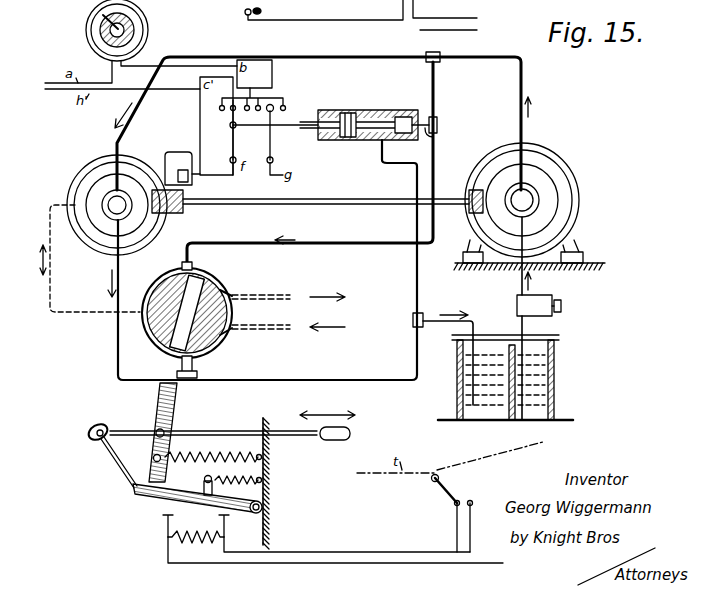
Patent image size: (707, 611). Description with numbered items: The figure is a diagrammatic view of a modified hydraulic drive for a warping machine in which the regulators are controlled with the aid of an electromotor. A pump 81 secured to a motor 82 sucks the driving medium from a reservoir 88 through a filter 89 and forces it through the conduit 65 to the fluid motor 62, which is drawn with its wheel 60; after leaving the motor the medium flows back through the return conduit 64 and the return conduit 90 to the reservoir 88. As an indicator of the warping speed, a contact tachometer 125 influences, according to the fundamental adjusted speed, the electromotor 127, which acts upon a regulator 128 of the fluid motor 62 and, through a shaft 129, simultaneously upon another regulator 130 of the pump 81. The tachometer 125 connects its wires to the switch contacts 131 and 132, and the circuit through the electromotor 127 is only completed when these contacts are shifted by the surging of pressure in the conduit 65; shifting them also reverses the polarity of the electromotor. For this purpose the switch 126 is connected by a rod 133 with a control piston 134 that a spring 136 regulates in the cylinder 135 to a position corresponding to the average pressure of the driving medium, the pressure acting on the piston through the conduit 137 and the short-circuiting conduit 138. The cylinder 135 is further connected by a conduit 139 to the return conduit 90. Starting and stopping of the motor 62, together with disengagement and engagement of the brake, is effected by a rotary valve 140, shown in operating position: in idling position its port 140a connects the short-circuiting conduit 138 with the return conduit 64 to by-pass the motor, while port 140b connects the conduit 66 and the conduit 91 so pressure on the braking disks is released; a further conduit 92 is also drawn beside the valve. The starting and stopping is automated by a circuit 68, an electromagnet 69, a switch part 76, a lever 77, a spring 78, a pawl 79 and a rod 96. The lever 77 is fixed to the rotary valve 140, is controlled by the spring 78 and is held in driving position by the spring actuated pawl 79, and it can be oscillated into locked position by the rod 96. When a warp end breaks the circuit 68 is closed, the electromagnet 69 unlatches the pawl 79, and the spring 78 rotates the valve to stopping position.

The contact tachometer 125 is at (140, 24).
The automatic starting and stopping part 76 is at (246, 14).
The conduit 65 is at (220, 56).
The switch contact 132 is at (277, 105).
The switch contact 131 is at (231, 124).
The switch 126 is at (231, 159).
The rod 133 is at (298, 127).
The electromotor 127 is at (182, 150).
The regulator 128 is at (175, 213).
The control piston 134 is at (364, 112).
The spring 136 is at (341, 112).
The cylinder 135 is at (397, 116).
The conduit 137 is at (438, 133).
The short-circuiting conduit 138 is at (435, 80).
The shaft 129 is at (310, 200).
The fluid motor 62 is at (97, 222).
The turbine wheel 60 is at (110, 250).
The return conduit 64 is at (117, 337).
The conduit 66 is at (85, 313).
The rotary valve 140 is at (226, 310).
The port 140a is at (215, 281).
The port 140b is at (222, 333).
The conduit 91 is at (271, 296).
The pipe 92 is at (280, 328).
The conduit 139 is at (416, 287).
The motor 82 is at (560, 168).
The pump 81 is at (532, 173).
The regulator 130 is at (475, 188).
The filter 89 is at (537, 303).
The return conduit 90 is at (475, 320).
The reservoir 88 is at (544, 362).
The lever 77 is at (178, 406).
The rod 96 is at (220, 431).
The spring 78 is at (213, 466).
The spring actuated pawl 79 is at (163, 495).
The electromagnet 69 is at (173, 550).
The circuit 68 is at (297, 562).